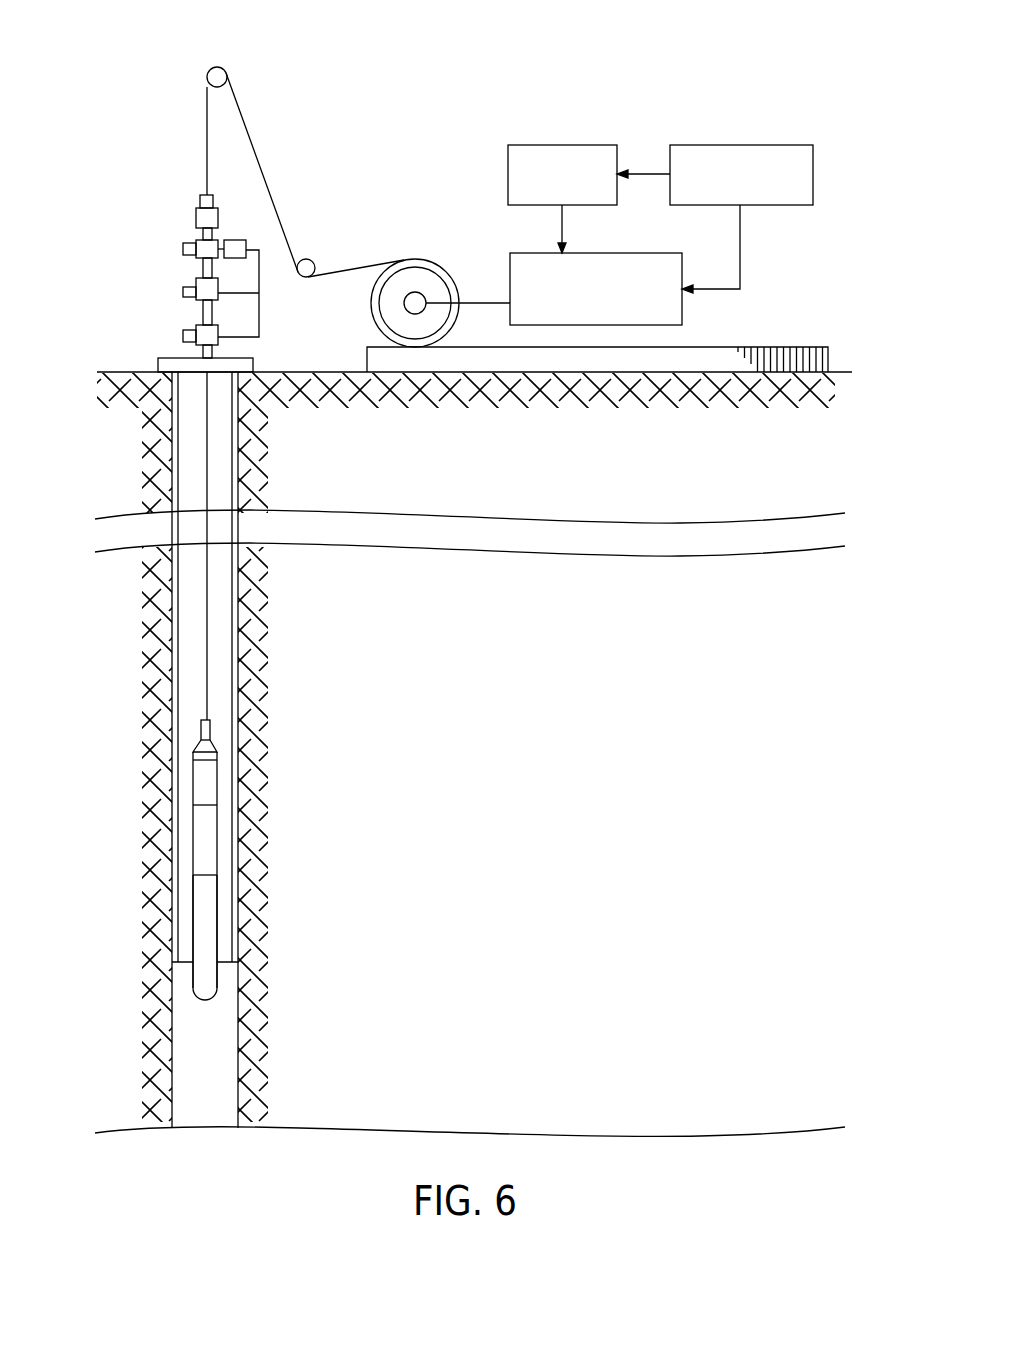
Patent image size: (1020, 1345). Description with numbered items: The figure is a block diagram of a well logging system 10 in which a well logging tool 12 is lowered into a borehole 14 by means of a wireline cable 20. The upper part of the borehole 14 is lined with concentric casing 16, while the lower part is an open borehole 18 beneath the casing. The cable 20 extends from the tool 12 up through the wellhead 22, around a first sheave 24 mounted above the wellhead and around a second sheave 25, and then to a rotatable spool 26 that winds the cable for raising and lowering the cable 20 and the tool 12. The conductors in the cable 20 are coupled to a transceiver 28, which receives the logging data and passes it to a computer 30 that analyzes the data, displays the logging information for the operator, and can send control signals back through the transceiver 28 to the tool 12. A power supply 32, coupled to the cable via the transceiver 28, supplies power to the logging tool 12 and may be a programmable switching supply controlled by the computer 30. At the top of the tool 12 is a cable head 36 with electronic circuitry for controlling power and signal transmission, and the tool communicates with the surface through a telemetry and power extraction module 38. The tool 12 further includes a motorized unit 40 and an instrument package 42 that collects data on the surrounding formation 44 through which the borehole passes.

The well logging system 10 is at (464, 64).
The well logging tool 12 is at (218, 935).
The borehole 14 is at (215, 1090).
The casing 16 is at (235, 655).
The open borehole 18 is at (246, 1004).
The wireline cable 20 is at (207, 697).
The wellhead 22 is at (178, 193).
The first sheave 24 is at (218, 68).
The second sheave 25 is at (308, 259).
The rotatable spool 26 is at (437, 261).
The transceiver 28 is at (640, 252).
The computer 30 is at (770, 144).
The power supply 32 is at (595, 144).
The cable head 36 is at (212, 730).
The telemetry and power extraction module 38 is at (208, 780).
The motorized unit 40 is at (208, 842).
The instrument package 42 is at (208, 988).
The formation 44 is at (253, 880).